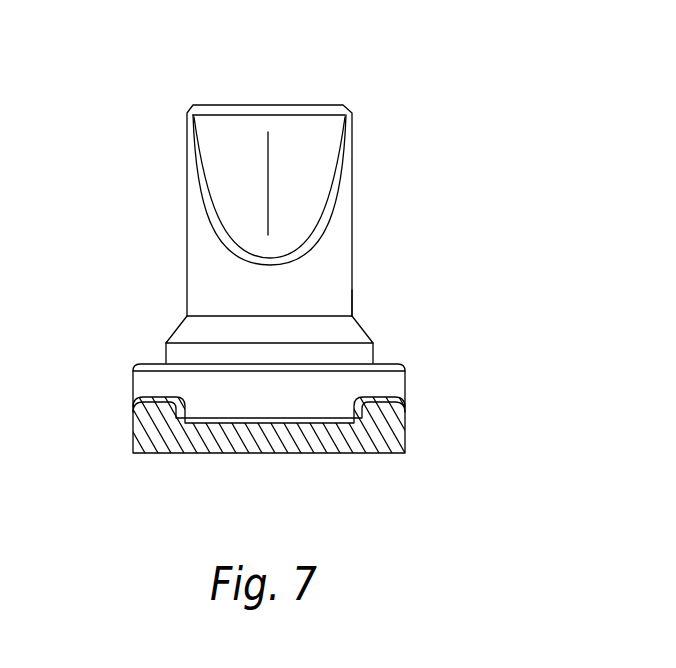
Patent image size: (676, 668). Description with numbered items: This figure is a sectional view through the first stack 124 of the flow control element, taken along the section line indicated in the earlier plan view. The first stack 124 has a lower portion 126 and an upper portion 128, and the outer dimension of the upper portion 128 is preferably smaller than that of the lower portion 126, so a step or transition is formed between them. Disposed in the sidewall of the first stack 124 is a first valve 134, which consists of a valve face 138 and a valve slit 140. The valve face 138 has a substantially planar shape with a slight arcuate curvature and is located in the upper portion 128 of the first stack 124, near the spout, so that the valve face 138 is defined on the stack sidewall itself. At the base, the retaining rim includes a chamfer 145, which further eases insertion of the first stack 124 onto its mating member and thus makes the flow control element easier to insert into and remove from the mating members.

The first valve 134 is at (432, 150).
The first stack 124 is at (353, 268).
The valve face 138 is at (227, 157).
The valve slit 140 is at (270, 148).
The upper portion 128 is at (353, 301).
The lower portion 126 is at (373, 353).
The chamfer 145 is at (138, 368).